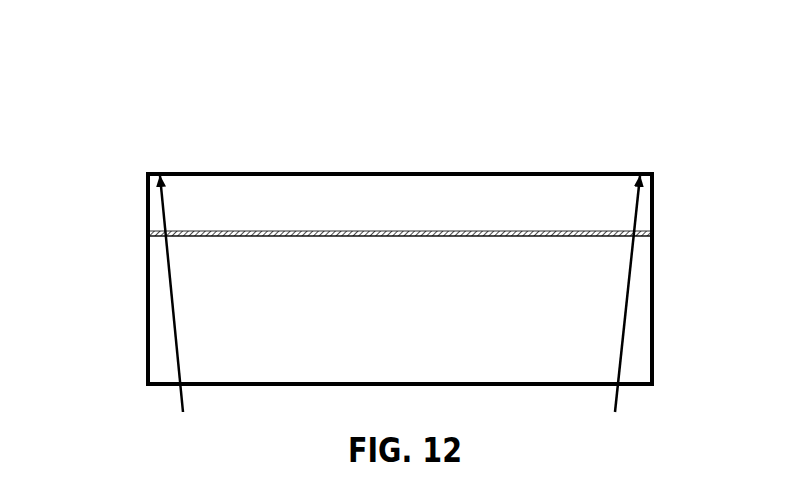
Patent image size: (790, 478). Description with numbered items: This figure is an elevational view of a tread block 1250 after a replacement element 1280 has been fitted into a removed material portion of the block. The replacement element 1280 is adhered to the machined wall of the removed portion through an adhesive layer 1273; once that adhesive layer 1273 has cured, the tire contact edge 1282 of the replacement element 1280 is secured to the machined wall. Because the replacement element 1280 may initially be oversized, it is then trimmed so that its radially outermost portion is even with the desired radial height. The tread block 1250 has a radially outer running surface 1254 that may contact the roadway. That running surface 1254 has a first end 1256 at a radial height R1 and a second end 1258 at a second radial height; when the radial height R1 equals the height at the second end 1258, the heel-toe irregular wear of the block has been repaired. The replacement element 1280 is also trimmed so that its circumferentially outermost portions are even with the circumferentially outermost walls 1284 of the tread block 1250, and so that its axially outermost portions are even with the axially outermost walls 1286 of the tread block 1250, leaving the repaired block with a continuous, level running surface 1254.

The tread block 1250 is at (611, 96).
The radially outer running surface 1254 is at (415, 173).
The first end 1256 is at (651, 174).
The second end 1258 is at (155, 173).
The adhesive layer 1273 is at (481, 232).
The replacement element 1280 is at (272, 190).
The tire contact edge 1282 is at (340, 232).
The circumferentially outermost walls 1284 is at (147, 278).
The axially outermost walls 1286 is at (164, 333).
The radial height R1 is at (408, 297).